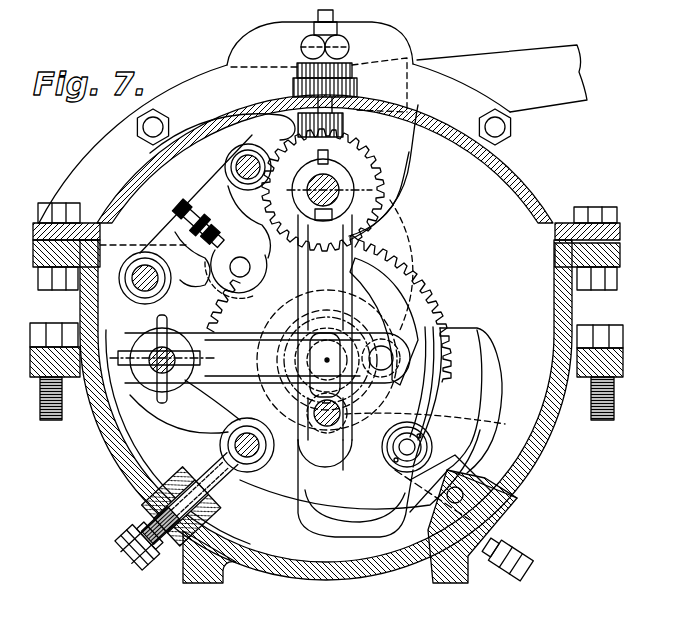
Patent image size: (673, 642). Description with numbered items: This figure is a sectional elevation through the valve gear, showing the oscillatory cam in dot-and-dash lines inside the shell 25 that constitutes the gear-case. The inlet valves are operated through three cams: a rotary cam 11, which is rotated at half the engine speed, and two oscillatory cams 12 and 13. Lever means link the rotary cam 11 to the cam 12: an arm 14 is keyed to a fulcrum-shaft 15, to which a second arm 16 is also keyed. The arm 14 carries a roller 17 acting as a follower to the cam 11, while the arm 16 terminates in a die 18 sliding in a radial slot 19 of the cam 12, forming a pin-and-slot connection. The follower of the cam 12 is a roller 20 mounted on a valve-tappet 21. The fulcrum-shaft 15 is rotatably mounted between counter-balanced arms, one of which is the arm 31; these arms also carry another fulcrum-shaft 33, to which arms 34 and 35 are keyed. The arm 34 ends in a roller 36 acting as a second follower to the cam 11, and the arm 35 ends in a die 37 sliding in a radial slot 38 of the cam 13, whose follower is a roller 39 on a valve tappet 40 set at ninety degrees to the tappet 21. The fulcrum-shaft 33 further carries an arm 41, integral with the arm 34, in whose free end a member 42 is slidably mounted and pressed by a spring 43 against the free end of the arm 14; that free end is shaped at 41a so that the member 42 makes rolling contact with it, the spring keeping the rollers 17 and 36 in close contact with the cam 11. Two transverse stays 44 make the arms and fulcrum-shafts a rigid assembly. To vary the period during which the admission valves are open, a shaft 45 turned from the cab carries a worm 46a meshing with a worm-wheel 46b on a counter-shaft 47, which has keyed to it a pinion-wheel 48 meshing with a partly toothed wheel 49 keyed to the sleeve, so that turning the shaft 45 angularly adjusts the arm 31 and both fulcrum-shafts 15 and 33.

The rotary cam 11 is at (447, 340).
The oscillatory cam 12 is at (300, 470).
The oscillatory cam 13 is at (305, 513).
The arm 14 is at (380, 254).
The fulcrum-shaft 15 is at (354, 190).
The arm 16 is at (402, 312).
The roller 17 is at (136, 268).
The die 18 is at (460, 422).
The radial slot 19 is at (344, 470).
The roller 20 is at (215, 447).
The valve-tappet 21 is at (182, 500).
The shell 25 is at (548, 446).
The counter-balanced arm 31 is at (355, 241).
The fulcrum-shaft 33 is at (150, 387).
The arm 34 is at (193, 406).
The arm 35 is at (267, 358).
The roller 36 is at (250, 474).
The die 37 is at (427, 403).
The radial slot 38 is at (400, 416).
The roller 39 is at (393, 470).
The valve tappet 40 is at (410, 482).
The arm 41 is at (184, 206).
The shaped free end 41a is at (232, 183).
The member 42 is at (232, 290).
The spring 43 is at (187, 232).
The transverse stay 44 is at (247, 150).
The shaft 45 is at (502, 78).
The worm 46a is at (240, 58).
The worm-wheel 46b is at (300, 125).
The counter-shaft 47 is at (133, 287).
The pinion-wheel 48 is at (357, 240).
The partly toothed wheel 49 is at (405, 285).